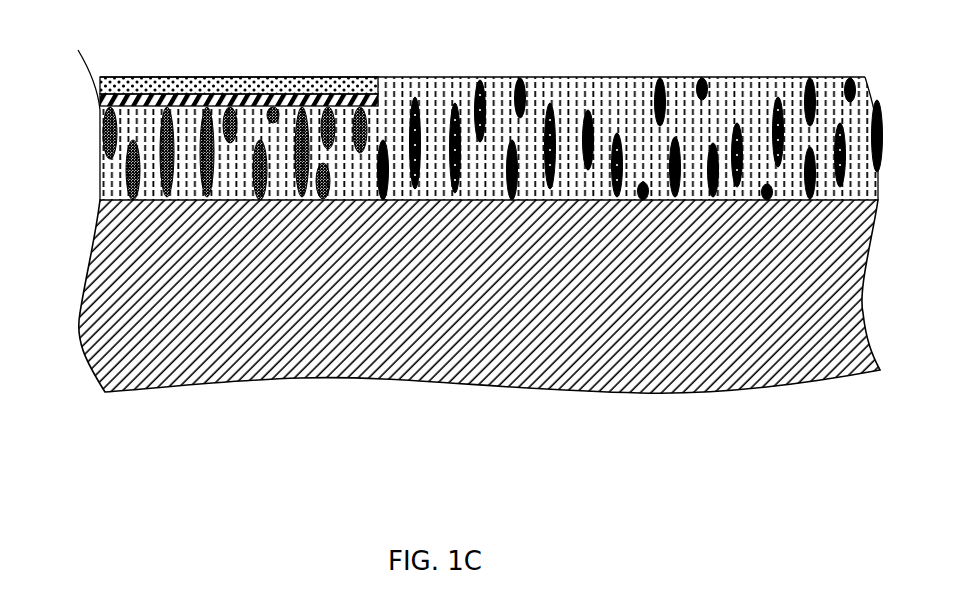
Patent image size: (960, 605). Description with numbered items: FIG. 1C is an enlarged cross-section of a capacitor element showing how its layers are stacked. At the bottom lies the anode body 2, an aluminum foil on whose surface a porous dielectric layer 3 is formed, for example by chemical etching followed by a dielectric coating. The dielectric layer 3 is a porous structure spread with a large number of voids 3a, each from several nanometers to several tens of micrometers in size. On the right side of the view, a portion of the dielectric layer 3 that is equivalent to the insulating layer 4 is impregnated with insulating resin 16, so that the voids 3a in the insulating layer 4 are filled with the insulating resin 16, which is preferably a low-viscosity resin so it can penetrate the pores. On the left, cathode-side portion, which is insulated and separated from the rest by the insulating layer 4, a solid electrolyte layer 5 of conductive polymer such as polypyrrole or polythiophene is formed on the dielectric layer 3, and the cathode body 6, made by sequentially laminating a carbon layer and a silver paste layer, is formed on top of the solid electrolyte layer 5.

The anode body 2 is at (837, 268).
The dielectric layer 3 is at (58, 77).
The voids 3a is at (167, 182).
The insulating layer 4 is at (867, 64).
The solid electrolyte layer 5 is at (240, 100).
The cathode body 6 is at (130, 82).
The insulating resin 16 is at (836, 153).